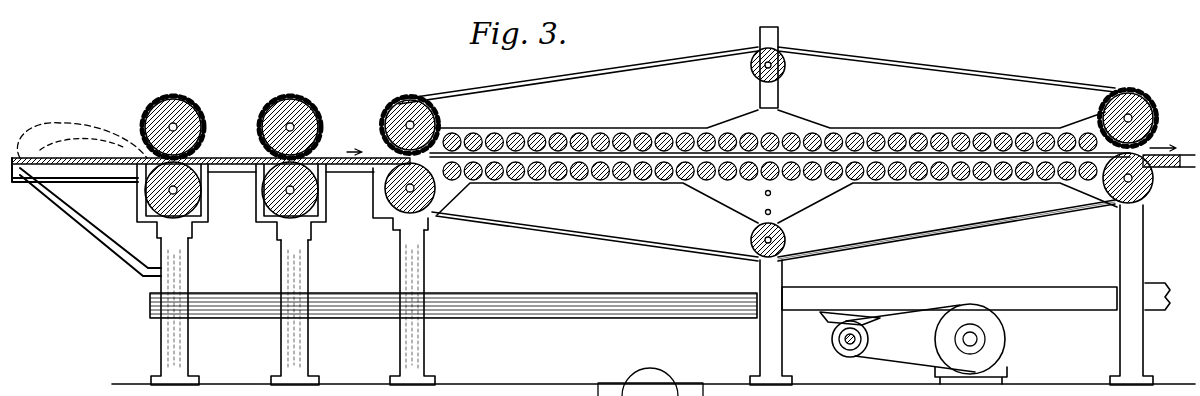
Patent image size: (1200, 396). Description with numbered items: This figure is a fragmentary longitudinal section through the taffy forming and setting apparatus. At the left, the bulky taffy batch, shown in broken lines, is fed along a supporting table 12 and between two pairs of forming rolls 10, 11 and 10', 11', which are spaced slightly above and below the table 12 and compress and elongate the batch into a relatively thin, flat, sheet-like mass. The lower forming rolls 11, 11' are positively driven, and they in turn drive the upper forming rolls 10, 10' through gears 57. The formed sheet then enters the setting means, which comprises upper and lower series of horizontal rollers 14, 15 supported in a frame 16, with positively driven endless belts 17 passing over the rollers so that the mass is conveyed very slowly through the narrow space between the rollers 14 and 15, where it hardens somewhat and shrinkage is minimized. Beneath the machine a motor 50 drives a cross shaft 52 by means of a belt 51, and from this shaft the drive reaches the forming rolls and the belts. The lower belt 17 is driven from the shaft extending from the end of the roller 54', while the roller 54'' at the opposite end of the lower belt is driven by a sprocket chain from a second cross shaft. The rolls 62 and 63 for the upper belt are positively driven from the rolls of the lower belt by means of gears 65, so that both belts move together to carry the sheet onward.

The upper forming roll 10 is at (180, 118).
The second upper forming roll 10' is at (275, 127).
The first lower forming roller 11 is at (172, 204).
The second lower forming roll 11' is at (273, 204).
The supporting table 12 is at (95, 175).
The upper series of horizontal rollers 14 is at (900, 128).
The lower series of horizontal rollers 15 is at (915, 177).
The frame 16 is at (738, 196).
The endless belts 17 is at (980, 228).
The motor 50 is at (990, 339).
The belt 51 is at (906, 360).
The cross shaft 52 is at (832, 342).
The roller 54' is at (436, 196).
The roller 54'' is at (1115, 199).
The gears 57 is at (308, 110).
The roll for the upper belt 62 is at (1135, 92).
The roll for the upper belt 63 is at (442, 116).
The gears 65 is at (405, 97).